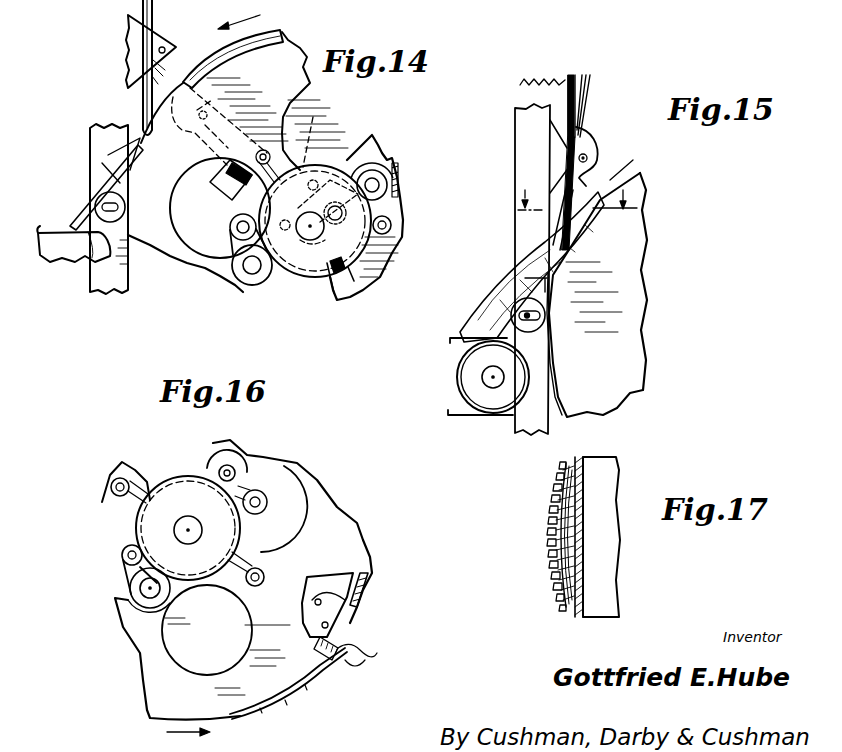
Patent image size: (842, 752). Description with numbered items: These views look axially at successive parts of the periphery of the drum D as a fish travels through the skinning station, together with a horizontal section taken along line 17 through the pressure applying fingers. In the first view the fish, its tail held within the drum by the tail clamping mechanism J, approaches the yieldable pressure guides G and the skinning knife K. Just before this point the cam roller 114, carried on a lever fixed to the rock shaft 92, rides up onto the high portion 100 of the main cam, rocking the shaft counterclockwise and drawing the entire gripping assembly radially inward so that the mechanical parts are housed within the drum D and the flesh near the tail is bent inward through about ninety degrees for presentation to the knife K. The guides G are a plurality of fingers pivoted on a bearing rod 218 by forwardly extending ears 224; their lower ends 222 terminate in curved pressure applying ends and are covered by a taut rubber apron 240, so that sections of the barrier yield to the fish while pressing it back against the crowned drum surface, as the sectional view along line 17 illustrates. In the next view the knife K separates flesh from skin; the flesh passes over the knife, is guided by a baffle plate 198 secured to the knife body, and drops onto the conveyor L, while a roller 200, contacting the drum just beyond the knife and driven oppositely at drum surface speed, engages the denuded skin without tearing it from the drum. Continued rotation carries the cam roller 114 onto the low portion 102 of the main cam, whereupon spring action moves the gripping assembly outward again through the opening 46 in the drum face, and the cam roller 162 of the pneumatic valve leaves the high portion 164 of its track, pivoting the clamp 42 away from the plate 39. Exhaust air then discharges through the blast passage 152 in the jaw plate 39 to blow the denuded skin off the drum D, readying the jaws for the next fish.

In FIG. 14, the yieldable pressure guides G is at (140, 101).
In FIG. 14, the skinning knife K is at (110, 154).
In FIG. 15, the skinning knife K is at (553, 280).
In FIG. 14, the tail clamping mechanism J is at (173, 126).
In FIG. 15, the conveyor L is at (456, 341).
In FIG. 16, the drum D is at (313, 497).
In FIG. 15, the section line 17— 17 is at (577, 185).
In FIG. 16, the plate 39 is at (318, 660).
In FIG. 16, the pivoted clamp 42 is at (364, 582).
In FIG. 16, the openings 46 is at (356, 610).
In FIG. 14, the rock shaft 92 is at (376, 183).
In FIG. 16, the rock shaft 92 is at (156, 597).
In FIG. 14, the high portion of main cam 100 is at (370, 135).
In FIG. 16, the high portion of main cam 100 is at (147, 473).
In FIG. 16, the low portion of main cam 102 is at (208, 587).
In FIG. 14, the cam roller 114 is at (391, 224).
In FIG. 16, the cam roller 114 is at (122, 556).
In FIG. 16, the blast passage 152 is at (338, 645).
In FIG. 16, the cam roller 162 is at (230, 556).
In FIG. 14, the high portion of auxiliary cam 164 is at (315, 188).
In FIG. 16, the high portion of auxiliary cam 164 is at (259, 496).
In FIG. 14, the baffle plate 198 is at (92, 210).
In FIG. 15, the baffle plate 198 is at (492, 313).
In FIG. 15, the roller 200 is at (541, 328).
In FIG. 15, the bearing rod 218 is at (590, 160).
In FIG. 17, the lower ends of fingers 222 is at (550, 515).
In FIG. 15, the ears 224 is at (583, 150).
In FIG. 17, the rubber apron 240 is at (552, 547).